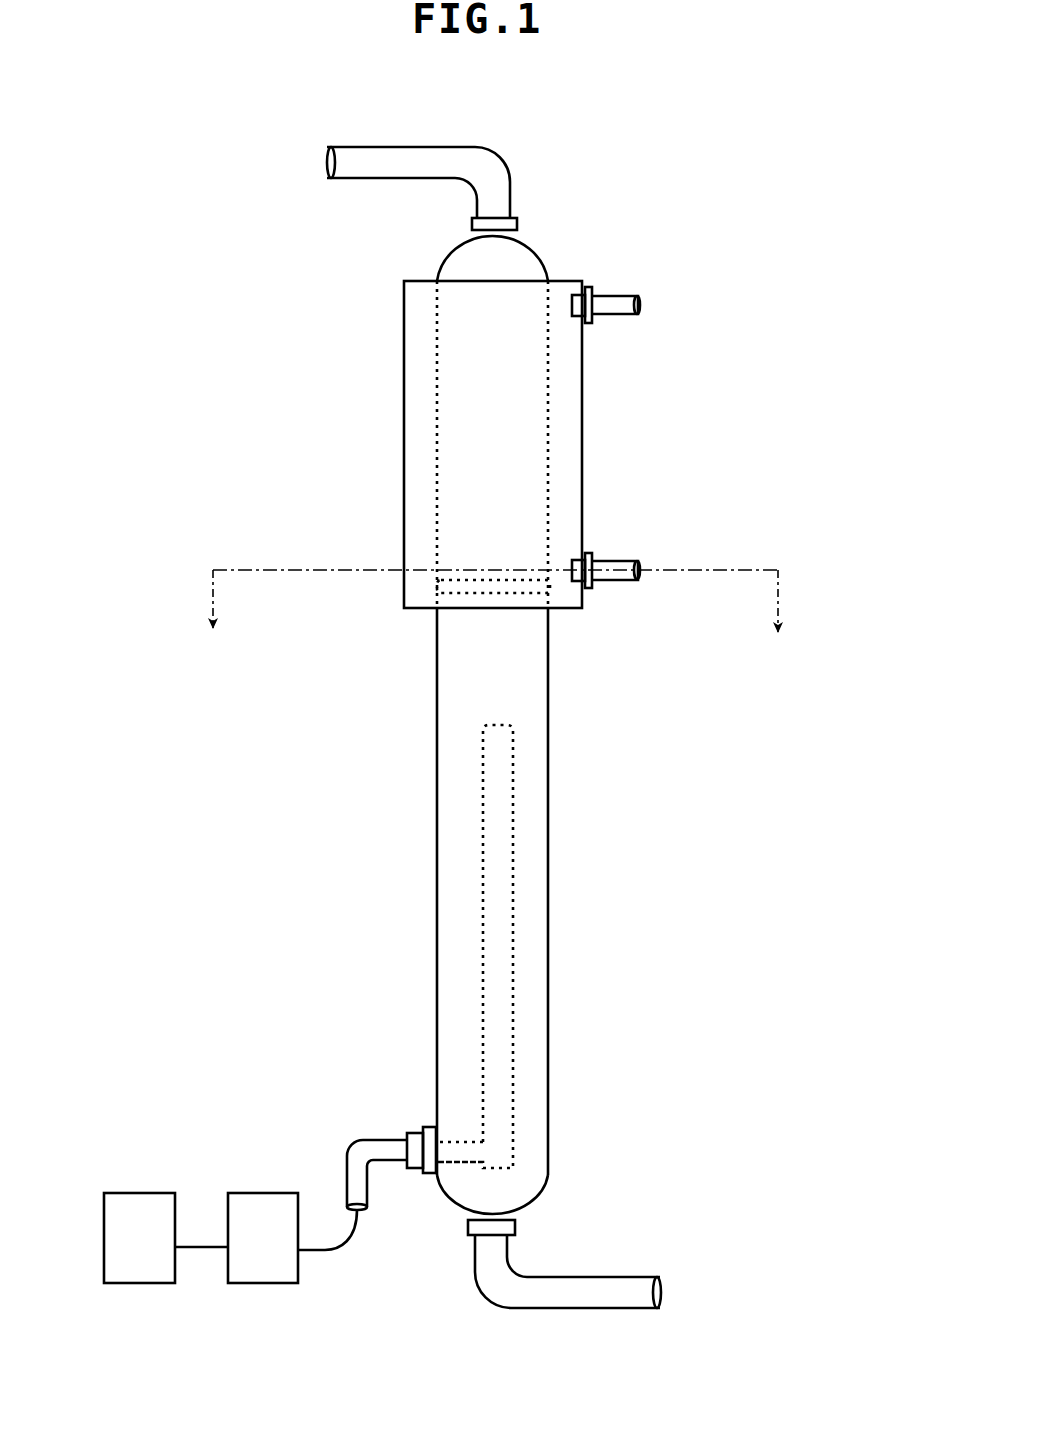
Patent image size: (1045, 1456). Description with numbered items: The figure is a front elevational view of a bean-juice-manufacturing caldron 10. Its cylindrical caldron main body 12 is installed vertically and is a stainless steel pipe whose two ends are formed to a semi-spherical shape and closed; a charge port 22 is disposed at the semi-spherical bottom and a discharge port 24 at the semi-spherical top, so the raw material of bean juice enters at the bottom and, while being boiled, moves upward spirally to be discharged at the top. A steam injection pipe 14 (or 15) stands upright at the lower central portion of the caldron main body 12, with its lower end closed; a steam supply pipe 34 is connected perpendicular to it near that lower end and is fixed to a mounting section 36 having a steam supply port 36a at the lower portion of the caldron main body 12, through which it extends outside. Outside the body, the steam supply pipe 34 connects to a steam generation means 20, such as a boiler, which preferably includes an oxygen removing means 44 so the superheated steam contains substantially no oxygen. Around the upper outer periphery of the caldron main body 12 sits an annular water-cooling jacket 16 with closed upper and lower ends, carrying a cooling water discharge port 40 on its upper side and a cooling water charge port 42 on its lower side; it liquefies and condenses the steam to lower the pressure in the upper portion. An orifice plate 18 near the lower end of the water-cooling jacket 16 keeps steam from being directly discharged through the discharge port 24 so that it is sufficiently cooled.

The bean-juice-manufacturing caldron 10 is at (380, 350).
The caldron main body 12 is at (505, 268).
The steam injection pipe 14 is at (382, 946).
The steam injection pipe 15 is at (492, 815).
The water-cooling jacket 16 is at (567, 411).
The orifice plate 18 is at (478, 594).
The steam generation means 20 is at (248, 1264).
The charge port 22 is at (497, 1245).
The discharge port 24 is at (487, 216).
The steam supply pipe 34 is at (455, 1165).
The mounting section 36 is at (415, 1138).
The steam supply port 36a is at (400, 1152).
The cooling water discharge port 40 is at (597, 306).
The cooling water charge port 42 is at (598, 590).
The oxygen removing means 44 is at (126, 1264).